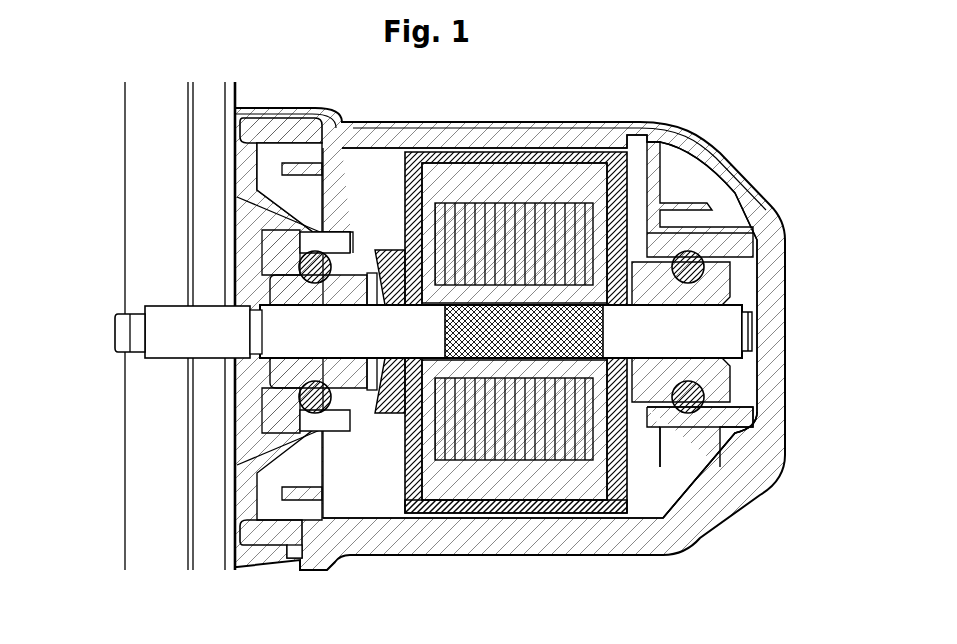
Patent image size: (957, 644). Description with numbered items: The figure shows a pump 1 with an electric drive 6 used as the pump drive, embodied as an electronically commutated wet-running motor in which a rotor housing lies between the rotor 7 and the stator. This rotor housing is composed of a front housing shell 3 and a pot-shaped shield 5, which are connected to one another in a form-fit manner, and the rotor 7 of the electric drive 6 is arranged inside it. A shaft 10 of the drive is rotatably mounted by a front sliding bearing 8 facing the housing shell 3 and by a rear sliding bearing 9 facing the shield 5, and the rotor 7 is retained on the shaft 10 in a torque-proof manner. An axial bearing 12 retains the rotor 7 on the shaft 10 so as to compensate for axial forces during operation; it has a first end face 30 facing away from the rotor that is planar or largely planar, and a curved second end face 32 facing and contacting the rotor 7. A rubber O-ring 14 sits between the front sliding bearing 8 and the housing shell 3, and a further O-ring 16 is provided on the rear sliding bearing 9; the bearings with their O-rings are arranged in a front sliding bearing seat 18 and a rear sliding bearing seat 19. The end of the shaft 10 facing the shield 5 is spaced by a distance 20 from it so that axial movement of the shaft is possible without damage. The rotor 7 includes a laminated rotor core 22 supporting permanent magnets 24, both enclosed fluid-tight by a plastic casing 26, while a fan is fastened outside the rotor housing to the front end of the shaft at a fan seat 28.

The pump 1 is at (454, 329).
The front housing shell 3 is at (278, 137).
The pot-shaped shield 5 is at (727, 493).
The electric drive 6 is at (638, 486).
The rotor 7 is at (620, 275).
The front sliding bearing 8 is at (357, 253).
The rear sliding bearing 9 is at (710, 295).
The shaft 10 is at (715, 330).
The axial bearing 12 is at (401, 257).
The O-ring 14 is at (327, 253).
The O-ring 16 is at (700, 262).
The front sliding bearing seat 18 is at (285, 430).
The rear sliding bearing seat 19 is at (732, 402).
The distance 20 is at (753, 342).
The laminated rotor core 22 is at (543, 225).
The permanent magnets 24 is at (490, 177).
The casing 26 is at (607, 508).
The fan seat 28 is at (152, 330).
The first end face 30 is at (373, 385).
The second end face 32 is at (402, 370).